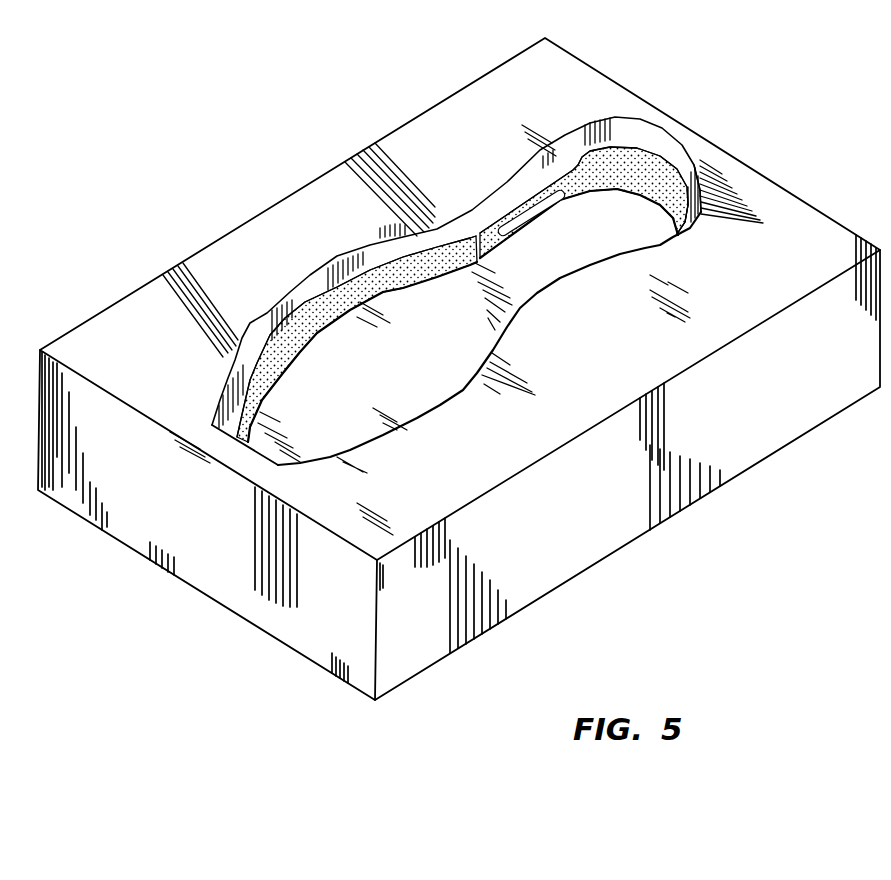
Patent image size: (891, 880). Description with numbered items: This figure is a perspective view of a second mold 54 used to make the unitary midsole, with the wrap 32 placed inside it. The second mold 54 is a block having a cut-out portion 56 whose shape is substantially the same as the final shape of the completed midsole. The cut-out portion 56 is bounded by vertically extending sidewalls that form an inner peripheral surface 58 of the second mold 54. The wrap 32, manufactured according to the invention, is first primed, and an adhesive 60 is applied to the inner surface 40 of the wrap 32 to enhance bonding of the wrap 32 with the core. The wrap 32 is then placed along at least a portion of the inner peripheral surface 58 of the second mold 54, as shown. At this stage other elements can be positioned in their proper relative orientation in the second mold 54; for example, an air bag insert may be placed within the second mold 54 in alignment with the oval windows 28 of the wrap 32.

The second mold 54 is at (800, 211).
The cut-out portion 56 is at (350, 388).
The inner peripheral surface 58 is at (668, 140).
The adhesive 60 is at (310, 322).
The inner surface 40 is at (625, 155).
The oval windows 28 is at (527, 222).
The wrap 32 is at (695, 163).